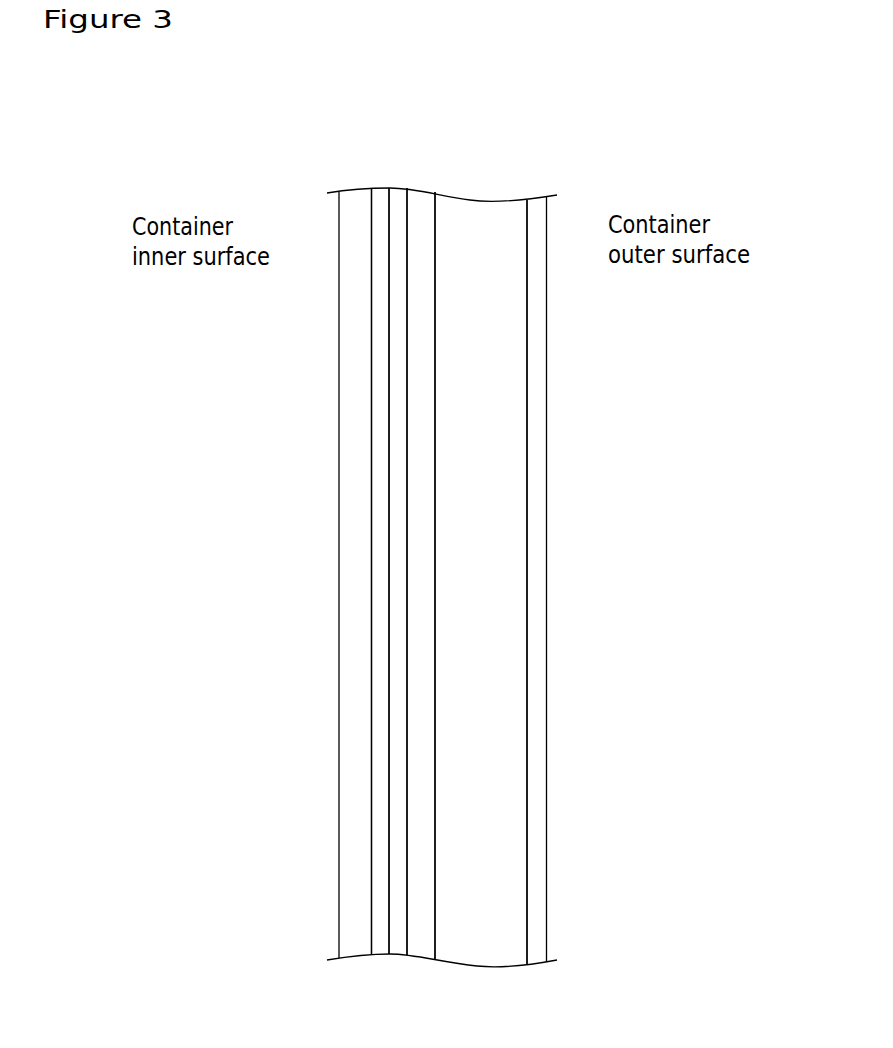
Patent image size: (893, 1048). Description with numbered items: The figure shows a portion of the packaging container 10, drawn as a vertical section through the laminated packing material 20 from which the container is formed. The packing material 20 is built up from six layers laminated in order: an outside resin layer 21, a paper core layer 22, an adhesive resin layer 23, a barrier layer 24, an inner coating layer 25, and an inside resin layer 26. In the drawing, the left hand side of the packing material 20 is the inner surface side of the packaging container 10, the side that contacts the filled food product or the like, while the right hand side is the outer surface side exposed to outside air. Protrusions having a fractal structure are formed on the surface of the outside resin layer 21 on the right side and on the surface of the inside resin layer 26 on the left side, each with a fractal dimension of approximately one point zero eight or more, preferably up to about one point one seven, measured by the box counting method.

The packaging container 10 is at (645, 430).
The packing material 20 is at (567, 90).
The outside resin layer 21 is at (537, 213).
The paper core layer 22 is at (493, 213).
The adhesive resin layer 23 is at (422, 213).
The barrier layer 24 is at (398, 213).
The inner coating layer 25 is at (383, 213).
The inside resin layer 26 is at (355, 213).